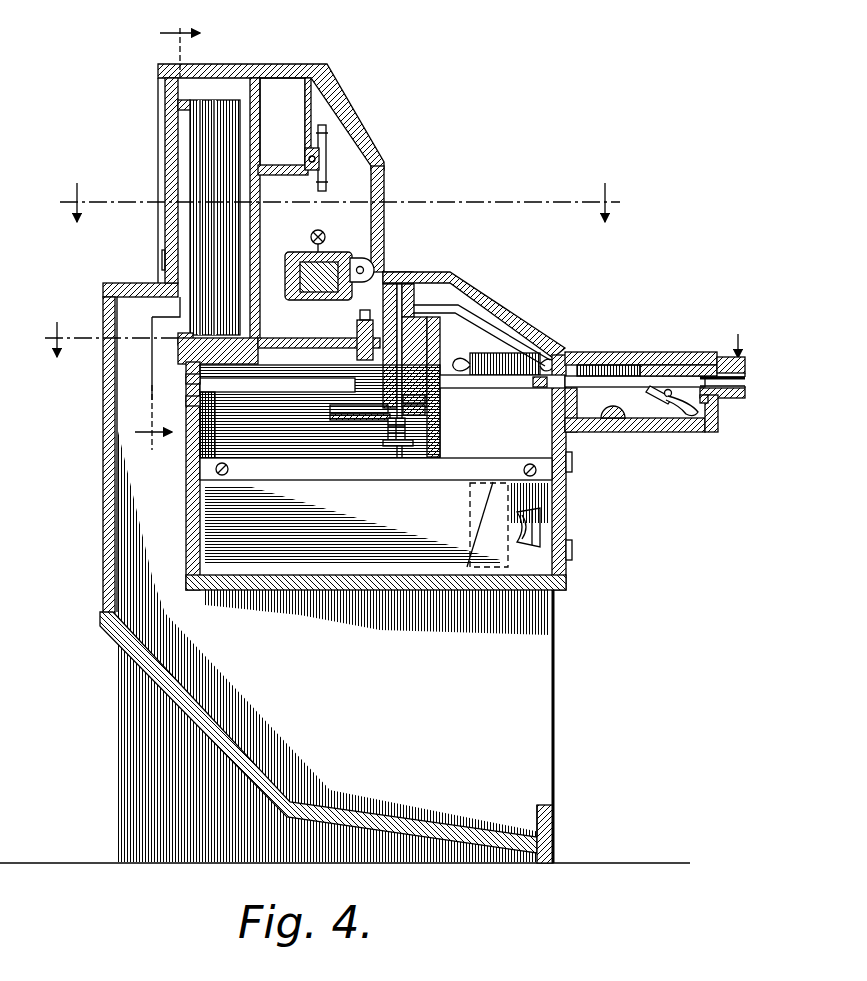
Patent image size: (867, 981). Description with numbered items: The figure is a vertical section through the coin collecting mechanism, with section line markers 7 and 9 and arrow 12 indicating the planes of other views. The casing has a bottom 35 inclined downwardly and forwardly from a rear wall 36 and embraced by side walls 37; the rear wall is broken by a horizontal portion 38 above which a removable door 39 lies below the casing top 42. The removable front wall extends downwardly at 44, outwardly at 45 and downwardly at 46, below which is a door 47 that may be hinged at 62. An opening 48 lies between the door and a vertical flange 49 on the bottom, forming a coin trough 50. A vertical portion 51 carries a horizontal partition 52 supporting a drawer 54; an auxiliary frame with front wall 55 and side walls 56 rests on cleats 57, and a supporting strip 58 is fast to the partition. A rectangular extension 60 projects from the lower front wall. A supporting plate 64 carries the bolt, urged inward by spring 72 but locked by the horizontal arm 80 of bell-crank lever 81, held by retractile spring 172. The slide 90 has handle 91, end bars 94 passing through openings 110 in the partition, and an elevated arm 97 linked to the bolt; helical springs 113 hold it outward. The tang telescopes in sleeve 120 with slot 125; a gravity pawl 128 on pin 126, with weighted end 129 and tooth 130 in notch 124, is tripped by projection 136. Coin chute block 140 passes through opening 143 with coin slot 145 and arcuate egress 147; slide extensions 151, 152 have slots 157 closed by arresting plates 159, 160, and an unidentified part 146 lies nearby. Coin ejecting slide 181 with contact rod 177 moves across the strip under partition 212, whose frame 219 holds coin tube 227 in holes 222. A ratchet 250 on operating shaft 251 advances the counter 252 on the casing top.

The section line 7- 7 is at (336, 202).
The section line 9- 9 is at (392, 340).
The direction arrow 12 is at (167, 238).
The bottom 35 is at (452, 805).
The rear wall 36 is at (100, 505).
The side walls 37 is at (105, 680).
The horizontal portion 38 is at (135, 283).
The door or removable section 39 is at (168, 150).
The casing top 42 is at (318, 66).
The front wall downward portion 44 is at (383, 186).
The front wall outward portion 45 is at (474, 315).
The front wall lower downward portion 46 is at (575, 425).
The door 47 is at (566, 512).
The opening 48 is at (545, 683).
The vertical flange 49 is at (556, 821).
The coin trough 50 is at (515, 815).
The vertical longitudinal portion 51 is at (190, 522).
The horizontal partition 52 is at (322, 590).
The drawer 54 is at (513, 516).
The front wall of auxiliary frame 55 is at (440, 438).
The side walls of auxiliary frame 56 is at (215, 448).
The cleats 57 is at (380, 474).
The horizontal supporting strip 58 is at (258, 351).
The rectangular extension 60 is at (683, 432).
The hinge 62 is at (570, 465).
The supporting plate 64 is at (290, 290).
The spring 72 is at (314, 235).
The horizontal arm 80 is at (302, 258).
The locking lever 81 is at (360, 261).
The slide or slidable frame 90 is at (510, 389).
The handle or shaft 91 is at (596, 384).
The rearwardly directed end bars 94 is at (188, 380).
The elevated arm 97 is at (462, 318).
The openings 110 is at (190, 402).
The helical springs 113 is at (512, 353).
The sleeve 120 is at (667, 352).
The inclined notch 124 is at (658, 370).
The longitudinal slot 125 is at (692, 385).
The pin 126 is at (667, 412).
The gravity pawl 128 is at (668, 400).
The weighted lower end 129 is at (707, 424).
The tooth 130 is at (652, 400).
The projection 136 is at (612, 425).
The coin chute block 140 is at (405, 280).
The openings 143 is at (412, 274).
The coin slots 145 is at (400, 276).
The piston body 146 is at (420, 287).
The arcuate opening 147 is at (372, 392).
The coin chute extension 151 is at (428, 398).
The coin chute extension 152 is at (385, 422).
The vertical coin slot 157 is at (422, 413).
The coin arresting plate 159 is at (352, 420).
The coin arresting plate 160 is at (397, 446).
The retractile spring 172 is at (393, 276).
The contact rod 177 is at (355, 340).
The coin ejecting slide 181 is at (278, 338).
The vertical partition 212 is at (260, 92).
The open frame 219 is at (250, 130).
The holes 222 is at (170, 105).
The coin tube 227 is at (196, 245).
The ratchet 250 is at (326, 131).
The operating shaft 251 is at (326, 156).
The registering device or counter mechanism 252 is at (292, 126).